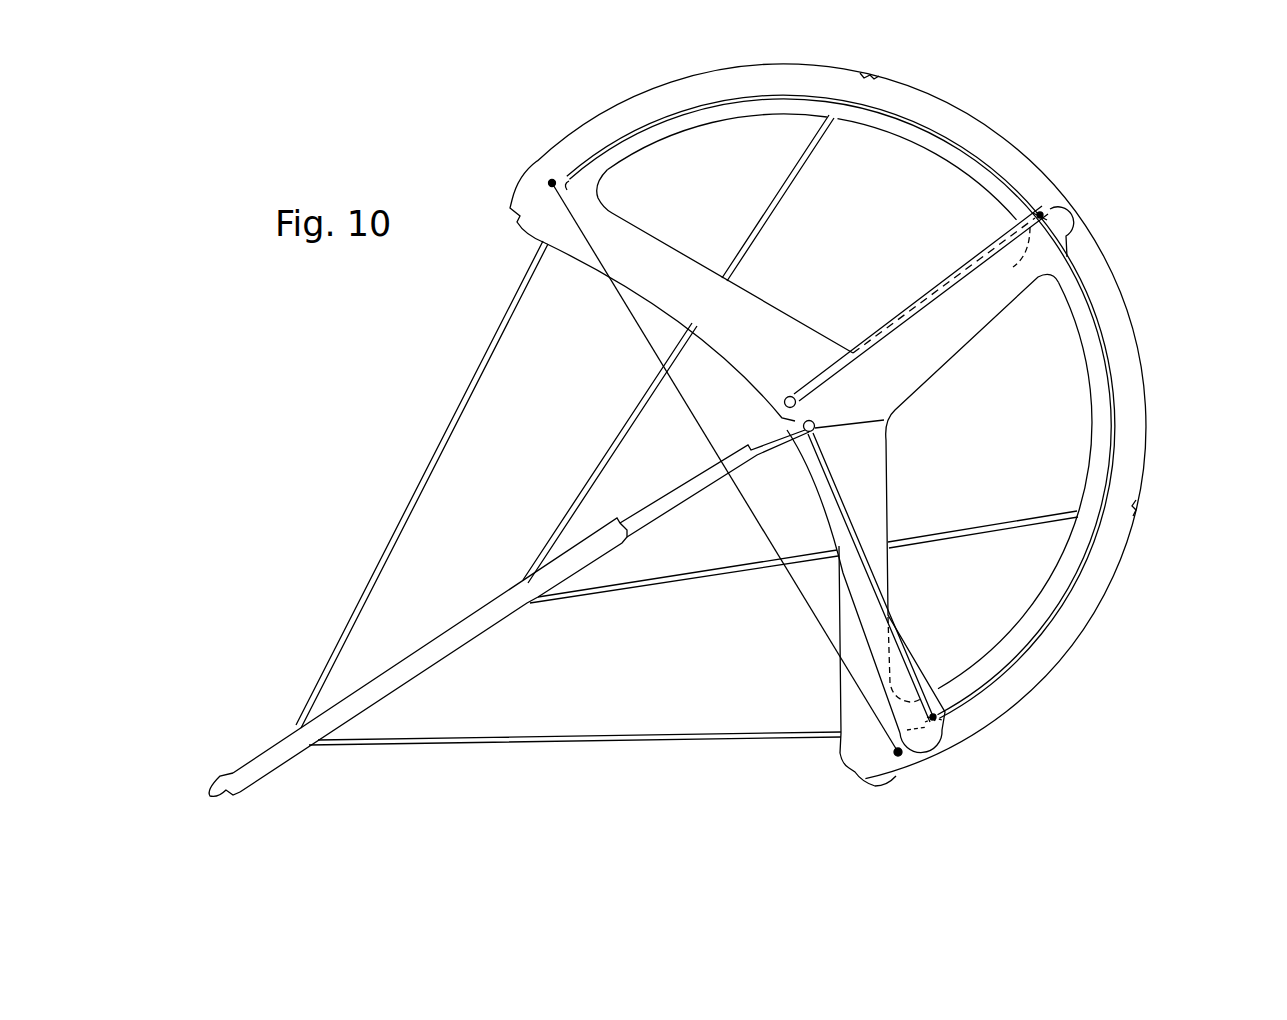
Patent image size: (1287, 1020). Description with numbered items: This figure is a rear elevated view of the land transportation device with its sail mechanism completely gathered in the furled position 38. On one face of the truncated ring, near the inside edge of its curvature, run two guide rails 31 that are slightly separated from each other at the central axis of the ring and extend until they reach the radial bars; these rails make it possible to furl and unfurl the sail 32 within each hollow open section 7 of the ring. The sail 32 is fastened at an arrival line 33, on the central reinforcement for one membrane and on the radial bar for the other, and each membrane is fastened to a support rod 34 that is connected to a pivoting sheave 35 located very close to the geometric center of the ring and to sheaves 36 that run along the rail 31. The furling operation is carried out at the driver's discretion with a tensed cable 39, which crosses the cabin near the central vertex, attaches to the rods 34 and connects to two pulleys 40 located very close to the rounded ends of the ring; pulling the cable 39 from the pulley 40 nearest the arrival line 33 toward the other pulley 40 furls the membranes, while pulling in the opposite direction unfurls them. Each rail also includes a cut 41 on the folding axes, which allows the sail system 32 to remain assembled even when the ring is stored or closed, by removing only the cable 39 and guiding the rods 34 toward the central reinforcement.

The open section 7 is at (905, 185).
The guide rail 31 is at (987, 160).
The sail 32 is at (1067, 225).
The arrival line 33 is at (1053, 248).
The support rod 34 is at (1060, 205).
The pivoting sheave 35 is at (803, 426).
The sheave 36 is at (1037, 200).
The furled position 38 is at (897, 693).
The tensed cable 39 is at (1080, 563).
The pulley 40 is at (552, 180).
The cut 41 is at (960, 140).